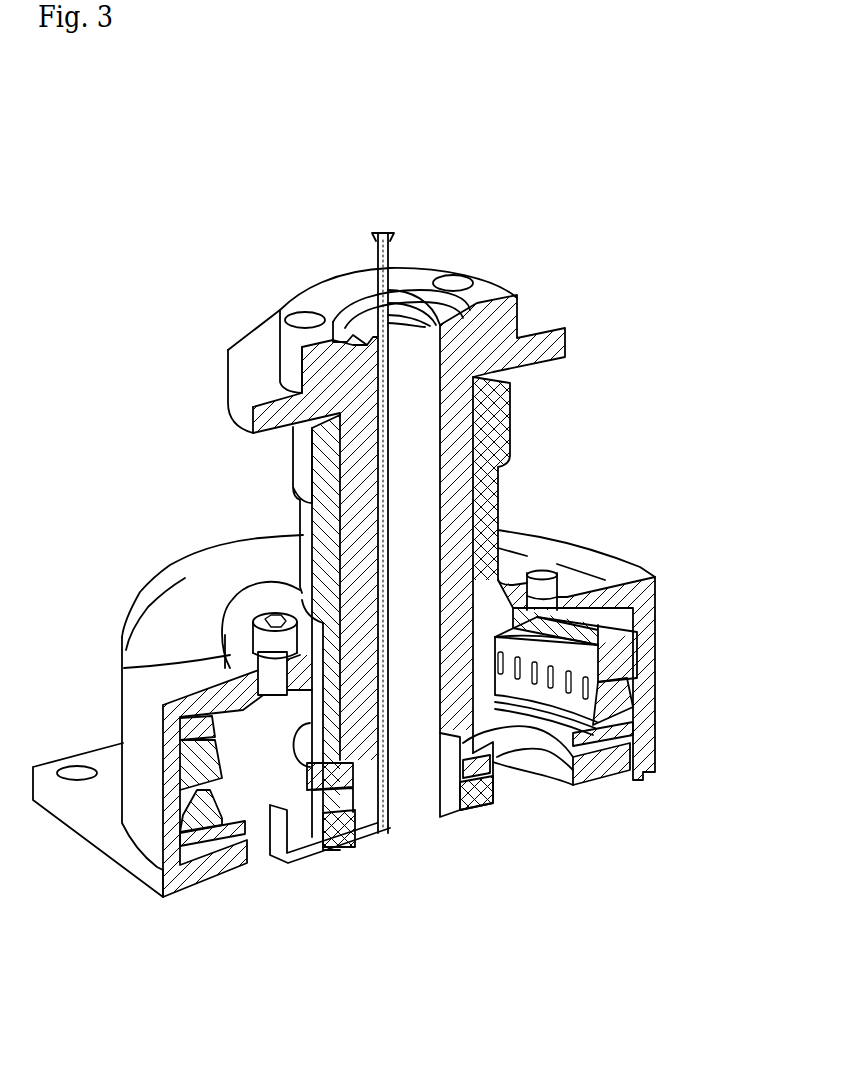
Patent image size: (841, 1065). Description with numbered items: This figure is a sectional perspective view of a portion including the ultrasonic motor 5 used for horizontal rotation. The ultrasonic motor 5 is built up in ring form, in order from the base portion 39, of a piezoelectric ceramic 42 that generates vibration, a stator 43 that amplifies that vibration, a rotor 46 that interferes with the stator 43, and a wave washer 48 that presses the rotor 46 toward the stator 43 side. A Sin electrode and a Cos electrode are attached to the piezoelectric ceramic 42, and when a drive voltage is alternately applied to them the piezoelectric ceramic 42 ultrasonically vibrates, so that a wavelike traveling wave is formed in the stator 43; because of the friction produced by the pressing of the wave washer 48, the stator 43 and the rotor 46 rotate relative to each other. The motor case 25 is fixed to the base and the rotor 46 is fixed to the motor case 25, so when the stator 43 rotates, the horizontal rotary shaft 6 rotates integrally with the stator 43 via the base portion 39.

The ultrasonic motor 5 is at (464, 729).
The horizontal rotary shaft 6 is at (478, 484).
The motor case 25 is at (590, 541).
The base portion 39 is at (630, 750).
The piezoelectric ceramic 42 is at (449, 760).
The stator 43 is at (637, 687).
The rotor 46 is at (627, 657).
The wave washer 48 is at (637, 607).